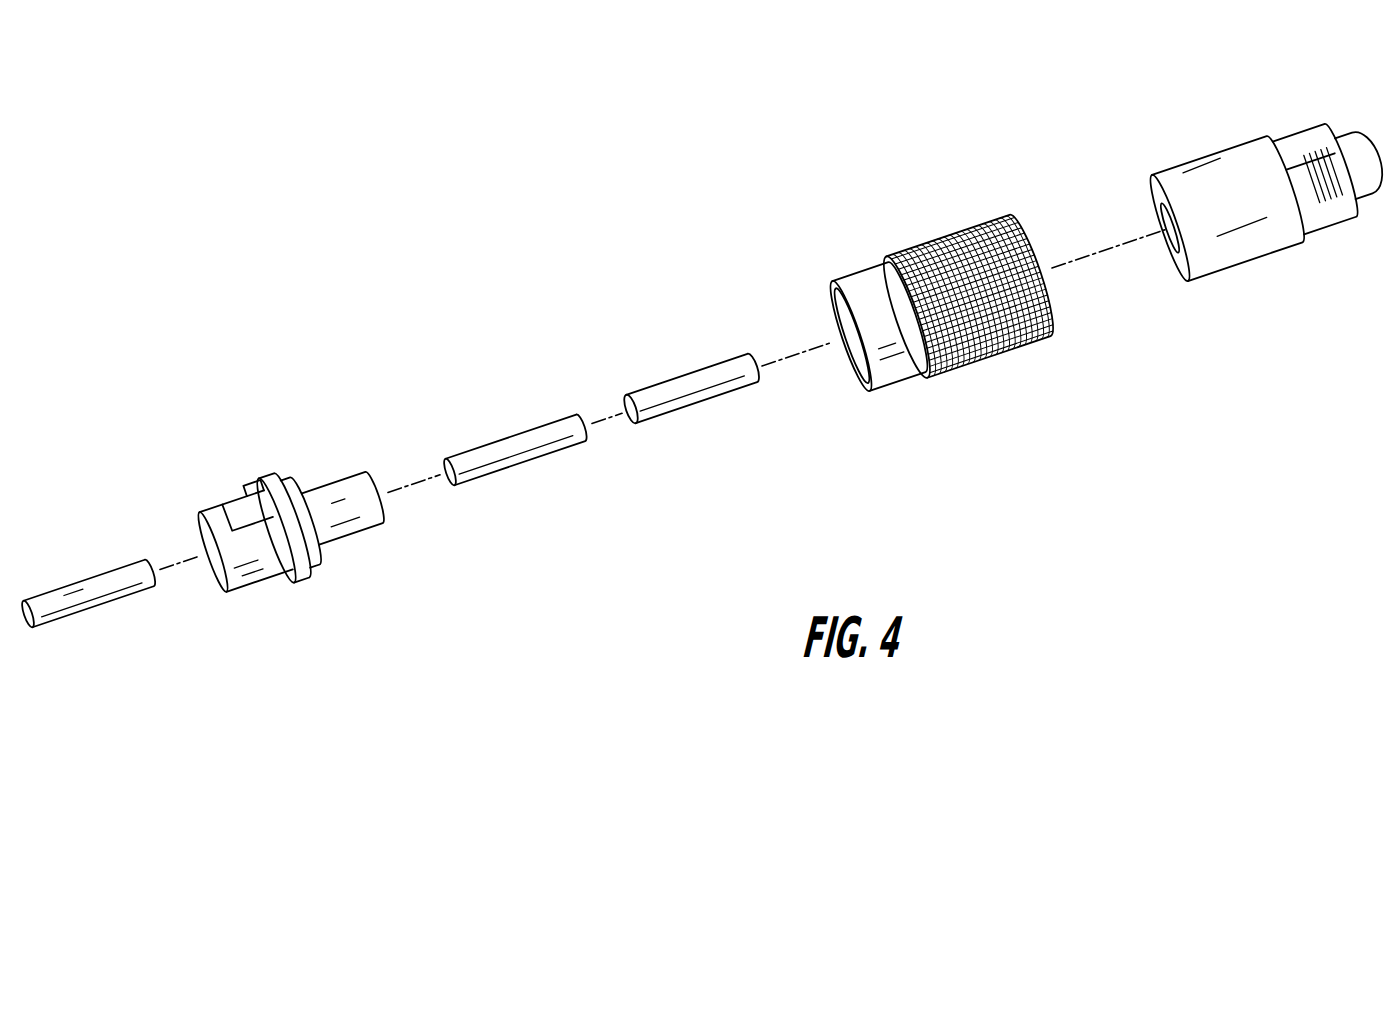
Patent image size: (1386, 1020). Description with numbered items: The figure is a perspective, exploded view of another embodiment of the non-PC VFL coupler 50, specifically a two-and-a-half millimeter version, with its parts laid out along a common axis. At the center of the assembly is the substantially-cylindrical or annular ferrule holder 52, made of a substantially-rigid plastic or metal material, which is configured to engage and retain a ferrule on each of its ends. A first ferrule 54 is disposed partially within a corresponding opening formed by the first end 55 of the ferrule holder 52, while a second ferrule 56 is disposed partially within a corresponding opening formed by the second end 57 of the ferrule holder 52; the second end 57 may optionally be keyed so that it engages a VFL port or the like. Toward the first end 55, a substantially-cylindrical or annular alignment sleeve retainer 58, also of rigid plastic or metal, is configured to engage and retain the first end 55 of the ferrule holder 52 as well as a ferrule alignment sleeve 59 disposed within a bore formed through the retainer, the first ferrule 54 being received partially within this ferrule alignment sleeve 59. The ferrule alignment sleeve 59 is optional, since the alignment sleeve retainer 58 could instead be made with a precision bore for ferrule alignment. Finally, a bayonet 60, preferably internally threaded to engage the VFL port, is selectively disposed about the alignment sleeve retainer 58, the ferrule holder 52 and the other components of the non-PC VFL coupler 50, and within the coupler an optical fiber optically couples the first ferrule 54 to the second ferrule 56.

The non-PC VFL coupler 50 is at (644, 246).
The ferrule holder 52 is at (297, 553).
The first ferrule 54 is at (532, 427).
The first end 55 is at (400, 523).
The second ferrule 56 is at (112, 565).
The second end 57 is at (190, 591).
The alignment sleeve retainer 58 is at (1227, 143).
The ferrule alignment sleeve 59 is at (717, 358).
The bayonet 60 is at (920, 243).